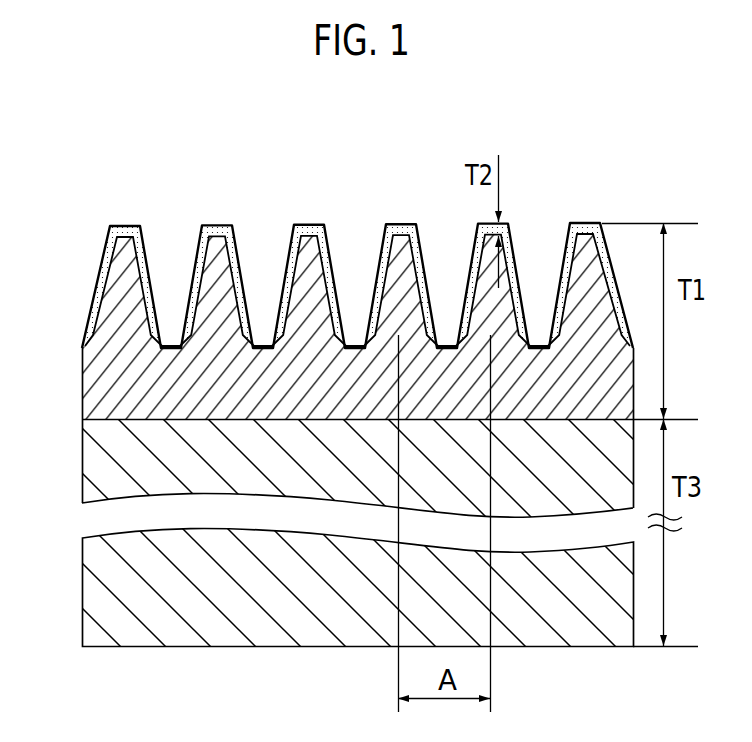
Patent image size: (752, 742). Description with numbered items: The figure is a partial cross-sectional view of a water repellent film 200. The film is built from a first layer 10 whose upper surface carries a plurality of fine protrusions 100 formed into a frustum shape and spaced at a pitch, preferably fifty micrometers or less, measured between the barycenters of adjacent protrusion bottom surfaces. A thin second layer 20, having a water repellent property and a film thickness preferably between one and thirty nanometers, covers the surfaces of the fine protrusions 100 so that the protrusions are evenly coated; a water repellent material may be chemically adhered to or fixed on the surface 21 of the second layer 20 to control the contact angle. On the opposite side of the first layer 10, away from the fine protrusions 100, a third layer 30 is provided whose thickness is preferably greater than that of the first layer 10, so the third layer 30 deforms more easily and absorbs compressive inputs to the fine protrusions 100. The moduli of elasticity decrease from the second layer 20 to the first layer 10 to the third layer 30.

The first layer 10 is at (327, 343).
The second layer 20 is at (329, 254).
The surface of the second layer 21 is at (228, 225).
The third layer 30 is at (145, 592).
The fine protrusions 100 is at (210, 276).
The water repellent film 200 is at (351, 379).